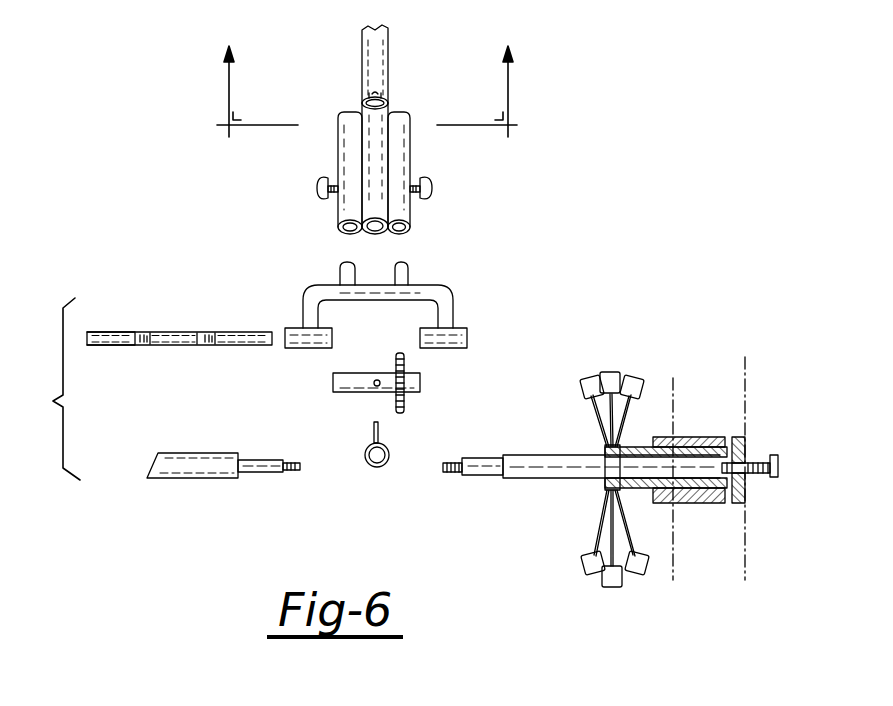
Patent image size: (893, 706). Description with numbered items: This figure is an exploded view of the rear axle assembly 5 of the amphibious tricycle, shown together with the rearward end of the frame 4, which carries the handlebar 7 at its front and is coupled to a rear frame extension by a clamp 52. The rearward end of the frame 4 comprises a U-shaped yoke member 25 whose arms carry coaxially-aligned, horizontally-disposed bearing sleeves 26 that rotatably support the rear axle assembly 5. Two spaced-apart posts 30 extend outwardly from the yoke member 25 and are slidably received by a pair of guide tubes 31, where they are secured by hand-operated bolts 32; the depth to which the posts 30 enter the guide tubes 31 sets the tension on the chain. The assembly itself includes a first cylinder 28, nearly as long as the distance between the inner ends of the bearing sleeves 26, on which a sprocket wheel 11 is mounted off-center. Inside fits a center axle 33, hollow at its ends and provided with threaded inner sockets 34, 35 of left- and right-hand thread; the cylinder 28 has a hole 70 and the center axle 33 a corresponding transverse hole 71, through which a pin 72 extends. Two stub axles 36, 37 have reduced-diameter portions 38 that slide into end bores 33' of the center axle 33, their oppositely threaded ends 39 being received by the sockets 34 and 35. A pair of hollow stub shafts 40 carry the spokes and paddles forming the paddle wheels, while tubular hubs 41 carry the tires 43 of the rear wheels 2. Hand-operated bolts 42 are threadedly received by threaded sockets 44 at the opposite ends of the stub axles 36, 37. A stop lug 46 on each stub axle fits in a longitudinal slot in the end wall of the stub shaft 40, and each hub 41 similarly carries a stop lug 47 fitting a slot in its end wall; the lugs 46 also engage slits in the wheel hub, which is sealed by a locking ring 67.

The rear wheel 2 is at (724, 396).
The frame 4 is at (386, 173).
The rear axle assembly 5 is at (162, 382).
The handlebar 7 is at (364, 91).
The sprocket wheel 11 is at (405, 405).
The U-shaped yoke member 25 is at (391, 295).
The bearing sleeve 26 is at (462, 337).
The first cylinder 28 is at (375, 393).
The post 30 is at (340, 268).
The guide tube 31 is at (343, 200).
The hand-operated bolt 32 is at (431, 195).
The center axle 33 is at (179, 314).
The end bore 33' is at (105, 314).
The threaded inner socket 34 is at (132, 343).
The threaded inner socket 35 is at (207, 345).
The stub axle 36 is at (190, 462).
The stub axle 37 is at (538, 441).
The reduced-diameter portion 38 is at (485, 476).
The threaded end 39 is at (449, 474).
The hollow stub shaft 40 is at (650, 448).
The tubular hub 41 is at (752, 405).
The hand-operated bolt 42 is at (775, 457).
The tire 43 is at (673, 378).
The threaded socket 44 is at (747, 484).
The stop lug 46 is at (598, 457).
The stop lug 47 is at (650, 442).
The clamp 52 is at (386, 97).
The locking ring 67 is at (612, 368).
The hole 70 is at (363, 387).
The transverse hole 71 is at (188, 344).
The pin 72 is at (375, 468).